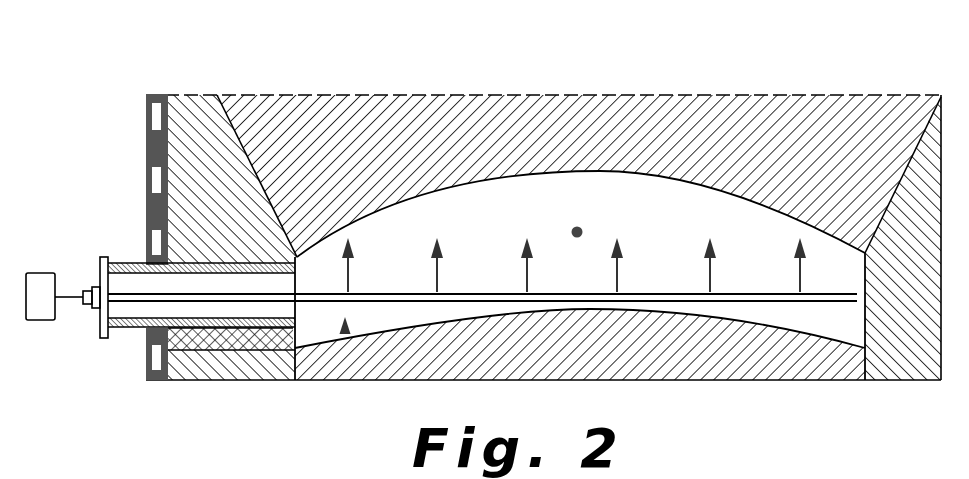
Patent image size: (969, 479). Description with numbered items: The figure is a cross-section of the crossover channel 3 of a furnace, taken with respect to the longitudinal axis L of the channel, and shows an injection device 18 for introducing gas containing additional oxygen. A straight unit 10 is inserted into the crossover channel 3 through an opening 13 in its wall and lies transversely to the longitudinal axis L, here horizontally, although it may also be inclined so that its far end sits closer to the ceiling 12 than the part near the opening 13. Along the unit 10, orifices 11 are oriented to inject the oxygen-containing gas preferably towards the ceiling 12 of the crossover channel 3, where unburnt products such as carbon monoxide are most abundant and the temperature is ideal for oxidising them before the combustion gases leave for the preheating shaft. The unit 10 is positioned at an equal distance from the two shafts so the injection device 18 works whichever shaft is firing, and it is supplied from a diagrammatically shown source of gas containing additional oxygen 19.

The crossover channel 3 is at (808, 140).
The straight unit 10 is at (143, 302).
The orifices 11 is at (715, 290).
The ceiling 12 is at (743, 198).
The opening 13 is at (270, 285).
The injection device 18 is at (343, 334).
The source of gas containing additional oxygen 19 is at (37, 292).
The longitudinal axis L is at (575, 228).